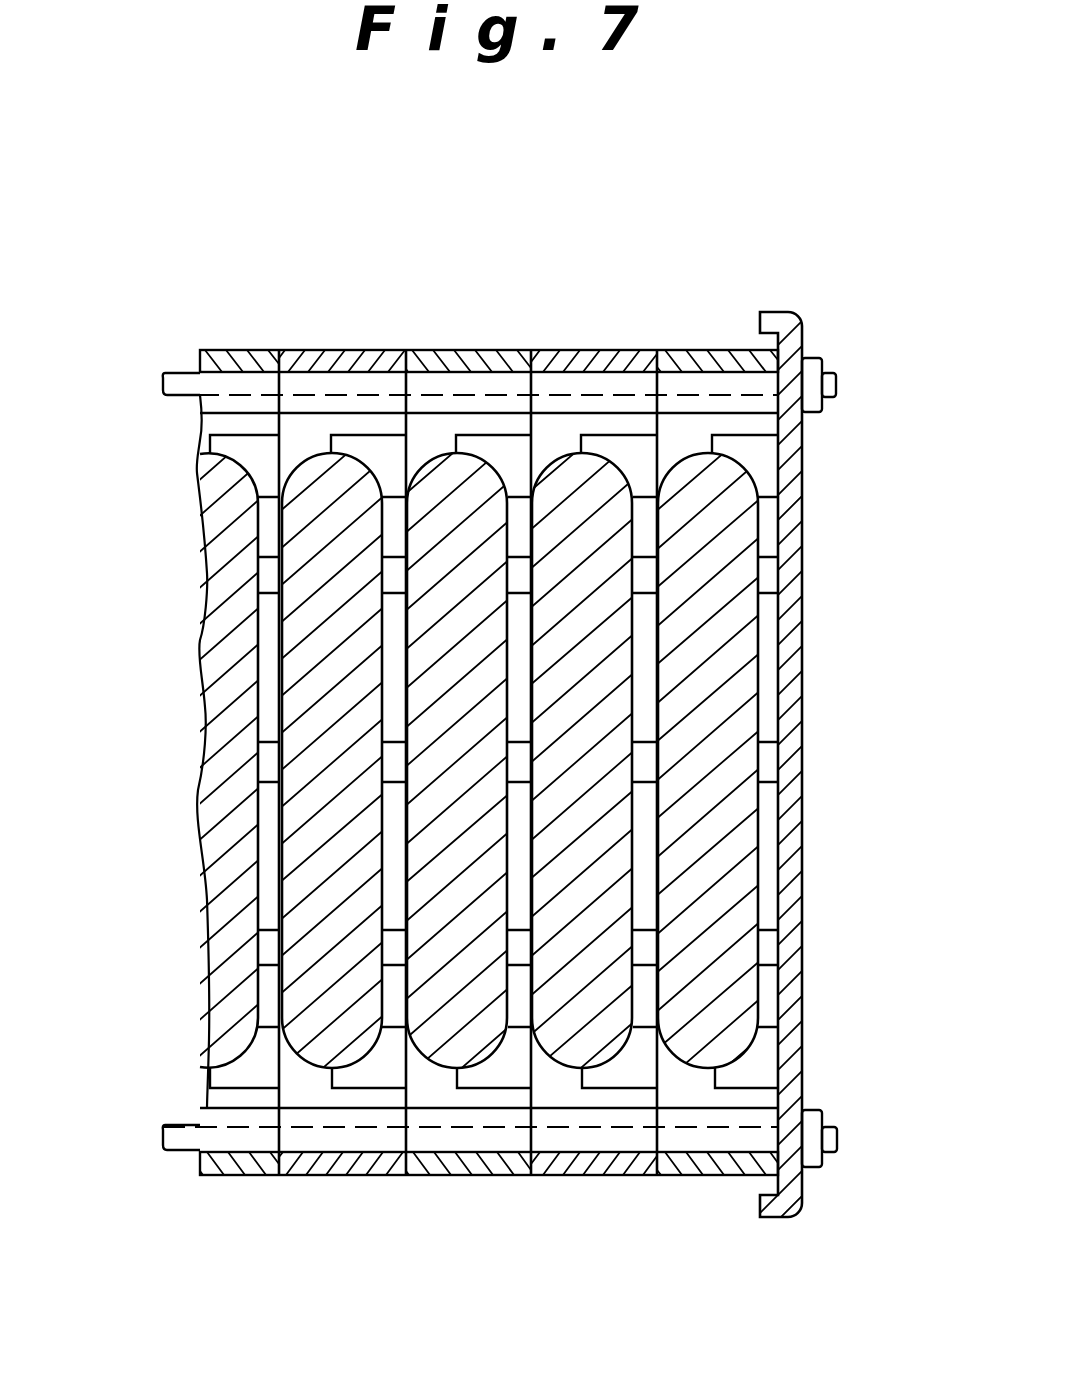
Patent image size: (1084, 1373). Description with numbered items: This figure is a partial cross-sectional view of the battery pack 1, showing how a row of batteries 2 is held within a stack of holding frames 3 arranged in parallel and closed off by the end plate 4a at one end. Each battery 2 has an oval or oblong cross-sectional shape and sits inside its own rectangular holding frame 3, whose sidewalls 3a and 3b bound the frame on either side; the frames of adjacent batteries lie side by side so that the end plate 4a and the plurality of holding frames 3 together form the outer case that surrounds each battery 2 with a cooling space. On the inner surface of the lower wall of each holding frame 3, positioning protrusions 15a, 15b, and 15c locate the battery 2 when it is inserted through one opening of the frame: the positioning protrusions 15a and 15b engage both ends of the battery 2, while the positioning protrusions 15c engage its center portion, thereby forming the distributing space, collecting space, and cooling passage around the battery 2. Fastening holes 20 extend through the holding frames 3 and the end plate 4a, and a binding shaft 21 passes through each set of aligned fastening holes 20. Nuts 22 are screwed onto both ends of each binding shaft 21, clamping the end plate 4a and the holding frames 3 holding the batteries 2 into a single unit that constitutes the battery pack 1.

The battery pack 1 is at (247, 349).
The battery 2 is at (342, 748).
The holding frame 3 is at (325, 349).
The sidewall 3a is at (710, 1172).
The sidewall 3b is at (725, 350).
The end plate 4a is at (792, 996).
The positioning protrusion 15a is at (760, 463).
The positioning protrusion 15b is at (755, 1063).
The positioning protrusion 15c is at (765, 579).
The fastening hole 20 is at (603, 385).
The binding shaft 21 is at (183, 387).
The nut 22 is at (812, 358).